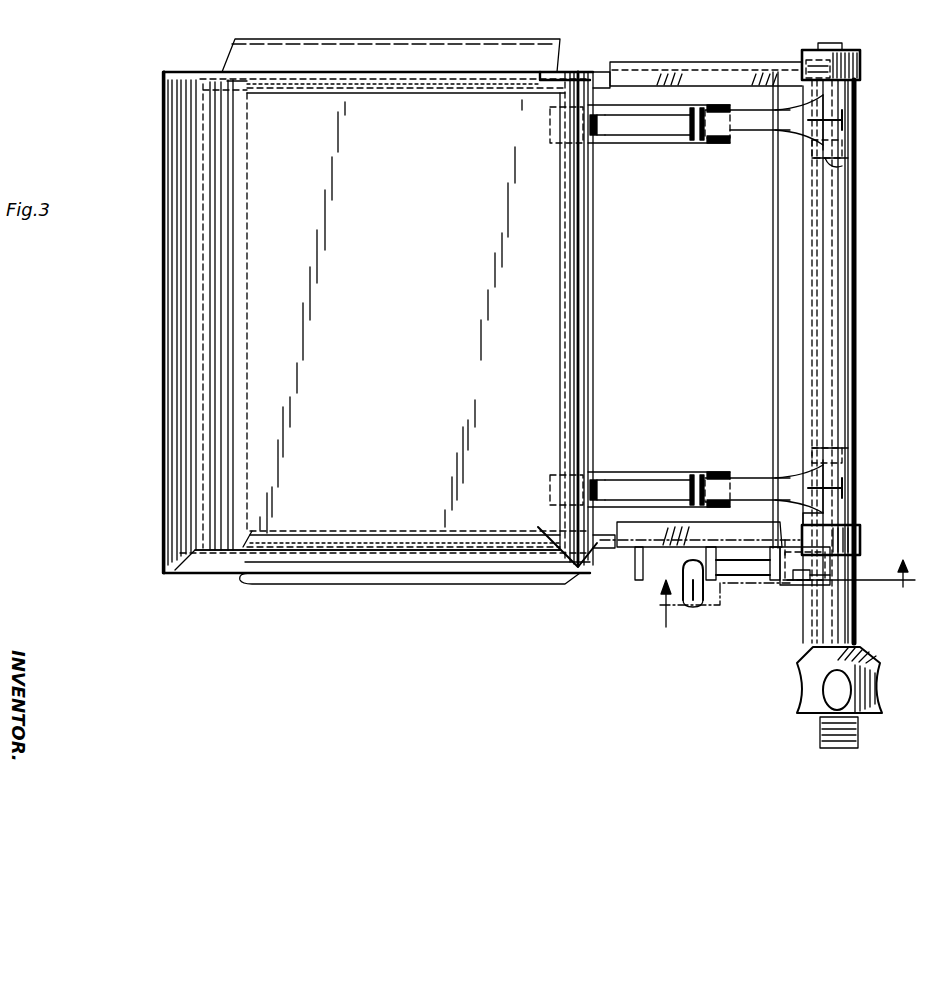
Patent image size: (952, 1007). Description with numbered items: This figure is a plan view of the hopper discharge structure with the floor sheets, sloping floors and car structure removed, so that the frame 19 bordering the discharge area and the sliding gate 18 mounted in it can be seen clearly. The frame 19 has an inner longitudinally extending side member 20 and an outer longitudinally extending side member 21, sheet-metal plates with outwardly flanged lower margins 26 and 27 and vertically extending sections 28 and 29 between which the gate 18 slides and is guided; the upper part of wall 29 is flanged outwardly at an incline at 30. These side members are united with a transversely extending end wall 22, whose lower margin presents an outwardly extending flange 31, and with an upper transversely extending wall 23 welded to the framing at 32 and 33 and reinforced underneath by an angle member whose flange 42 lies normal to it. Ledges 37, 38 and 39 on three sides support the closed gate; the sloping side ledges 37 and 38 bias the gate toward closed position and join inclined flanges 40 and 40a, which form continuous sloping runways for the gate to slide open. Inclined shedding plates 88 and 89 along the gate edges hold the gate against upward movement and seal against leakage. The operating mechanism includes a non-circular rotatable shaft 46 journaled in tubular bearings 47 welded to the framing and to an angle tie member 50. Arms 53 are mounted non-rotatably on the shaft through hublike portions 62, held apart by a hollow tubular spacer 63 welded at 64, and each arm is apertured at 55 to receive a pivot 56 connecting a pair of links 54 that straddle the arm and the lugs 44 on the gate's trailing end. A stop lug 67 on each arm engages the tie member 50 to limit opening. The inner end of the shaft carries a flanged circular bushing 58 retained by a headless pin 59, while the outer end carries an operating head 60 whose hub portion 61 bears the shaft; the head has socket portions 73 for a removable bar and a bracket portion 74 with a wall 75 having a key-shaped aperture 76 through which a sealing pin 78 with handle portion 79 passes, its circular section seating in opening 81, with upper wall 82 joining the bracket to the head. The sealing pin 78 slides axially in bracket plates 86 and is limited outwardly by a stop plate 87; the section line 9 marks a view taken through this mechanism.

The frame 19 is at (152, 110).
The transversely extending end wall 22 is at (175, 338).
The outwardly extending flange 31 is at (205, 421).
The outwardly flanged lower margin 26 is at (242, 55).
The inner longitudinally extending side member 20 is at (410, 70).
The weld 32 is at (556, 70).
The side ledge 37 is at (310, 86).
The vertically extending section 28 is at (438, 80).
The inclined shedding plate 88 is at (477, 80).
The end ledge 39 is at (247, 212).
The sliding gate 18 is at (410, 278).
The upper transversely extending wall 23 is at (551, 268).
The flange 42 is at (585, 330).
The flange 40 is at (598, 75).
The side ledge 38 is at (303, 540).
The vertically extending section 29 is at (393, 545).
The inclined shedding plate 89 is at (474, 532).
The outwardly flanged lower margin 27 is at (301, 572).
The outer longitudinally extending side member 21 is at (345, 575).
The inclined outward flange 30 is at (403, 573).
The weld 33 is at (565, 545).
The flange 40a is at (605, 548).
The arm 53 is at (754, 128).
The lug 44 is at (605, 130).
The link 54 is at (662, 135).
The pivot 56 is at (700, 135).
The aperture 55 is at (716, 143).
The angle tie member 50 is at (772, 280).
The hollow tubular spacer 63 is at (858, 280).
The rotatable shaft 46 is at (845, 355).
The flanged circular bushing 58 is at (858, 50).
The headless pin 59 is at (802, 52).
The bearing 47 is at (860, 70).
The stop lug 67 is at (858, 116).
The hublike portion 62 is at (858, 140).
The weld 64 is at (850, 165).
The hub portion 61 is at (858, 525).
The stop plate 87 is at (641, 582).
The sealing pin 78 is at (688, 568).
The handle portion 79 is at (703, 603).
The bracket plate 86 is at (772, 548).
The bracket portion 74 is at (780, 575).
The upper wall 82 is at (795, 580).
The opening 81 is at (800, 590).
The key-shaped aperture 76 is at (788, 540).
The wall 75 is at (742, 600).
The operating head 60 is at (826, 670).
The socket portion 73 is at (828, 696).
The section arrows 9 is at (784, 606).